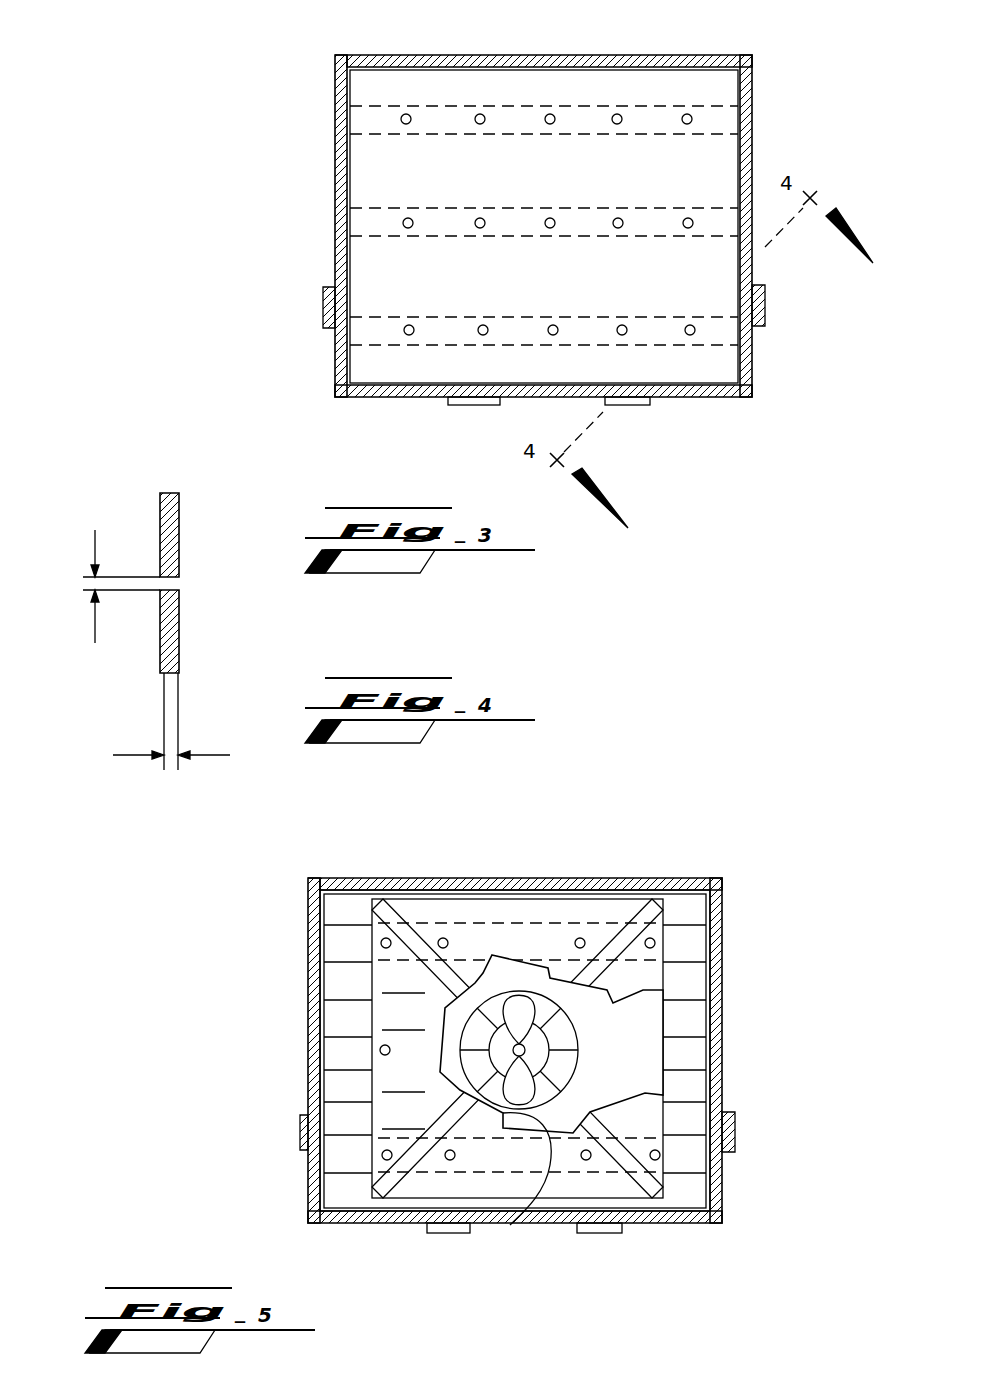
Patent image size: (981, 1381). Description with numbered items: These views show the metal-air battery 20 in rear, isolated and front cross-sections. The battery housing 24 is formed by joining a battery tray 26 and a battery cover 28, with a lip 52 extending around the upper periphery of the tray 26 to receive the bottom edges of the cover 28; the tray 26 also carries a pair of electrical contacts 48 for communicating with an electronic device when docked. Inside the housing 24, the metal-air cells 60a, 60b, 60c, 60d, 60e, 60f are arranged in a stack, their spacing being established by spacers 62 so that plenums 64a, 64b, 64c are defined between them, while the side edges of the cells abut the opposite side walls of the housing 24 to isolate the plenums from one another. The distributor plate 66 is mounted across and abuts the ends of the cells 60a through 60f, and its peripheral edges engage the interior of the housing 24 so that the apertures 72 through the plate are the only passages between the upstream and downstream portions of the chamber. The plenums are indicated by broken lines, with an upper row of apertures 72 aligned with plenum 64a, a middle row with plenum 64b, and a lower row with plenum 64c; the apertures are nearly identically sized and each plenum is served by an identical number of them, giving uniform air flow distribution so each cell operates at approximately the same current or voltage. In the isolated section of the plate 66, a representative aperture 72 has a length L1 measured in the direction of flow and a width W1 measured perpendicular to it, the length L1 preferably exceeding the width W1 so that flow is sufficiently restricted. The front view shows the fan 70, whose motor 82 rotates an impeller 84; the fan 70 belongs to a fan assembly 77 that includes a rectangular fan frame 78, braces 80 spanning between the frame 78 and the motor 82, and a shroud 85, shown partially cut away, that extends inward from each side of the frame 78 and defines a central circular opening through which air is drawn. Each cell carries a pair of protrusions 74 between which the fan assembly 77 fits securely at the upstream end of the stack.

In FIG. 3, the metal-air battery 20 is at (298, 26).
In FIG. 5, the metal-air battery 20 is at (752, 790).
In FIG. 3, the battery housing 24 is at (674, 50).
In FIG. 5, the battery housing 24 is at (736, 1228).
In FIG. 3, the battery tray 26 is at (760, 397).
In FIG. 5, the battery tray 26 is at (726, 1195).
In FIG. 3, the battery cover 28 is at (753, 68).
In FIG. 5, the battery cover 28 is at (730, 893).
In FIG. 3, the electrical contacts 48 is at (476, 404).
In FIG. 5, the electrical contacts 48 is at (457, 1236).
In FIG. 3, the lip 52 is at (325, 300).
In FIG. 5, the lip 52 is at (300, 1122).
In FIG. 5, the metal-air cell 60a is at (566, 916).
In FIG. 5, the metal-air cell 60b is at (403, 981).
In FIG. 5, the metal-air cell 60c is at (403, 1018).
In FIG. 5, the metal-air cell 60d is at (403, 1080).
In FIG. 5, the metal-air cell 60e is at (403, 1117).
In FIG. 5, the metal-air cell 60f is at (563, 1188).
In FIG. 3, the spacers 62 is at (544, 226).
In FIG. 5, the spacers 62 is at (336, 948).
In FIG. 3, the plenum 64a is at (370, 135).
In FIG. 3, the plenum 64b is at (372, 222).
In FIG. 3, the plenum 64c is at (757, 345).
In FIG. 3, the distributor plate 66 is at (575, 96).
In FIG. 4, the distributor plate 66 is at (180, 530).
In FIG. 5, the fan 70 is at (488, 952).
In FIG. 3, the apertures 72 is at (407, 114).
In FIG. 4, the apertures 72 is at (192, 588).
In FIG. 5, the apertures 72 is at (578, 938).
In FIG. 5, the protrusions 74 is at (333, 978).
In FIG. 5, the fan assembly 77 is at (500, 872).
In FIG. 5, the fan frame 78 is at (630, 893).
In FIG. 5, the braces 80 is at (408, 920).
In FIG. 5, the motor 82 is at (558, 1064).
In FIG. 5, the impeller 84 is at (510, 1225).
In FIG. 5, the shroud 85 is at (640, 1034).
In FIG. 4, the aperture width W1 is at (84, 583).
In FIG. 4, the aperture length L1 is at (173, 765).